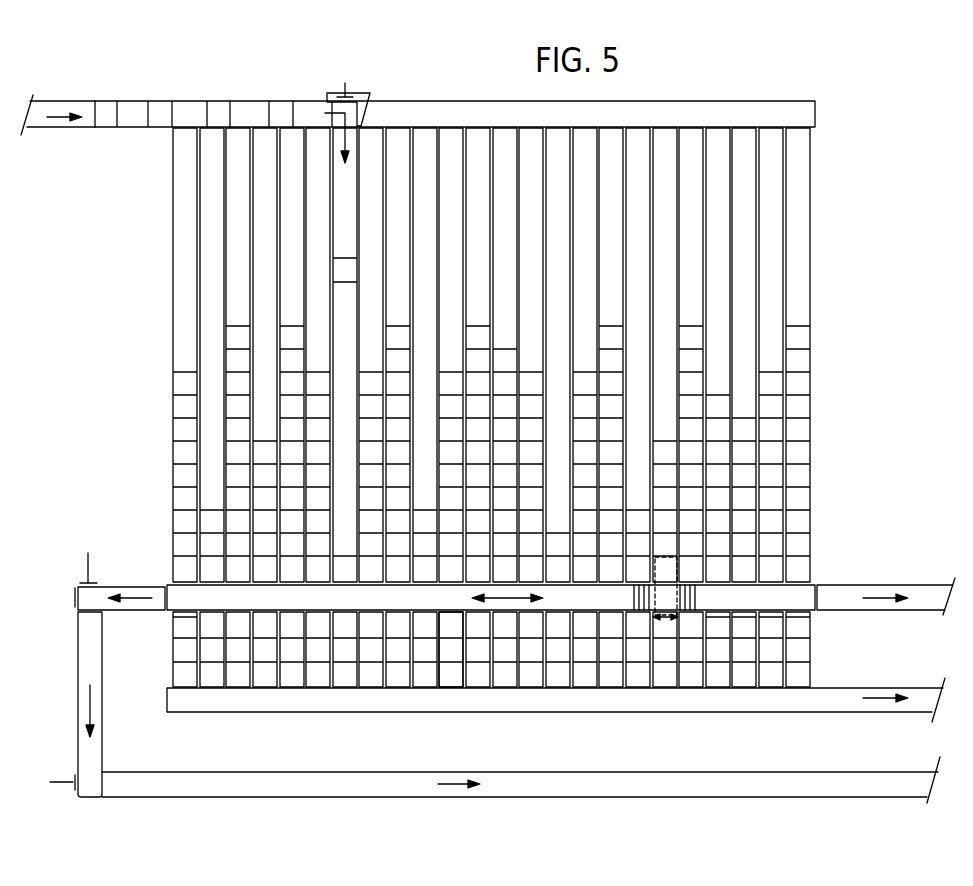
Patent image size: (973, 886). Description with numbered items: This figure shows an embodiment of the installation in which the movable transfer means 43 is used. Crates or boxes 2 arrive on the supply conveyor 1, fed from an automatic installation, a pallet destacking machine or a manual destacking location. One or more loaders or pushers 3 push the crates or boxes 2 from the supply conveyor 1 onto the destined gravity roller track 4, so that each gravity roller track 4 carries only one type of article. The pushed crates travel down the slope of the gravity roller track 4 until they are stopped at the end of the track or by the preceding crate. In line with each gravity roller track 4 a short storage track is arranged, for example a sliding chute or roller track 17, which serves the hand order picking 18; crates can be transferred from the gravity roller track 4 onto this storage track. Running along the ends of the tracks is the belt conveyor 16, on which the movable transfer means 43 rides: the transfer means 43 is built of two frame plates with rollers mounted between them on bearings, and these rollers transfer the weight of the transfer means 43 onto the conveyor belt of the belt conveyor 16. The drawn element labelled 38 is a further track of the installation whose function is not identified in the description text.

The inlet conduit 1 is at (55, 110).
The upper distributor header 2 is at (104, 110).
The secondary inlet nozzle 3 is at (359, 93).
The heat exchange tubes 4 is at (450, 153).
The intermediate header 16 is at (797, 602).
The lower tube pass 17 is at (183, 648).
The lower tube 18 is at (454, 649).
The outlet header 38 is at (844, 700).
The partition in intermediate header 43 is at (633, 597).